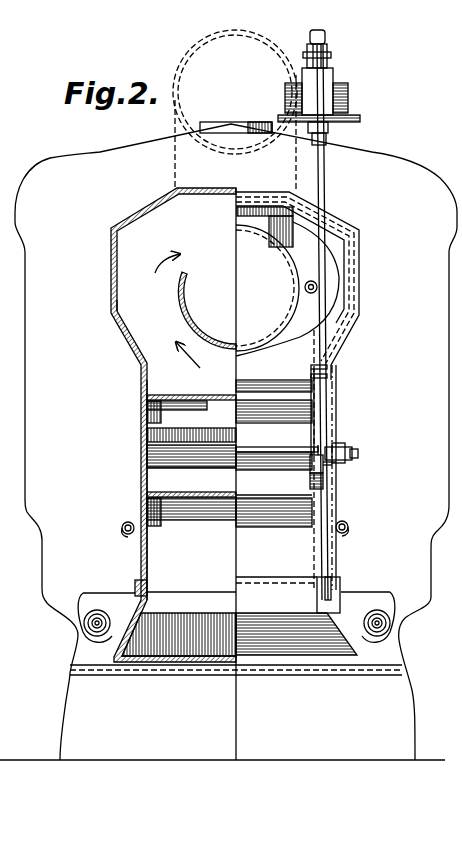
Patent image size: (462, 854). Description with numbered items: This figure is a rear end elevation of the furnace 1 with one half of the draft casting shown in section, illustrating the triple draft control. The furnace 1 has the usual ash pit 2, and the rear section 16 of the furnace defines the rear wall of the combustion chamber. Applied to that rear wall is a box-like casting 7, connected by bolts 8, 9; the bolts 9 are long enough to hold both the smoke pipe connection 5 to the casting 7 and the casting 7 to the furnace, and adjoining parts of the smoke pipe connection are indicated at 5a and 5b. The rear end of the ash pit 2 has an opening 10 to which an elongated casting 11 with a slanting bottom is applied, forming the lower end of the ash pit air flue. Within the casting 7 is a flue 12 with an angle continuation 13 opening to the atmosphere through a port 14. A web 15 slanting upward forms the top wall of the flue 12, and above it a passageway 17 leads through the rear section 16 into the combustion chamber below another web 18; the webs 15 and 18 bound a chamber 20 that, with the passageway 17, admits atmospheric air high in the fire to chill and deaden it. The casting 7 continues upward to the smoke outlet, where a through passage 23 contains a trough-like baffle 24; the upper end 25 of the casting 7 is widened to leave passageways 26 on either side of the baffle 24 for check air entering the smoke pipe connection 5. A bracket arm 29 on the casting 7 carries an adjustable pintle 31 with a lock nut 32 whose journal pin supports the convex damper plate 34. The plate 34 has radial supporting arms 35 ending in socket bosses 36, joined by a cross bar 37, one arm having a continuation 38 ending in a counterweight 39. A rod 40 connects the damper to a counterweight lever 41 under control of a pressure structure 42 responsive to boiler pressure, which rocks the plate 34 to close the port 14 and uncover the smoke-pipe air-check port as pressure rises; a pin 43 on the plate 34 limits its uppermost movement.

The furnace 1 is at (42, 556).
The ash pit 2 is at (236, 693).
The smoke pipe connection 5 is at (262, 349).
The drum hood 5a is at (293, 220).
The blower housing 5b is at (186, 58).
The casting 7 is at (141, 386).
The bolts 8 is at (122, 533).
The bolts 9 is at (311, 293).
The opening 10 is at (182, 645).
The elongated casting 11 is at (292, 640).
The flue 12 is at (159, 574).
The angle continuation 13 is at (274, 485).
The port 14 is at (283, 500).
The web 15 is at (196, 498).
The rear section 16 is at (158, 435).
The passageway 17 is at (147, 437).
The web 18 is at (182, 365).
The chamber 20 is at (191, 478).
The through passage 23 is at (183, 263).
The baffle 24 is at (180, 292).
The upper end of the casting 25 is at (111, 297).
The passageways 26 is at (150, 325).
The bracket arm 29 is at (334, 452).
The adjustable pintles 31 is at (359, 452).
The lock nuts 32 is at (345, 460).
The damper plate 34 is at (280, 392).
The radial supporting arms 35 is at (320, 446).
The socket boss 36 is at (330, 467).
The cross bar 37 is at (252, 446).
The continuation 38 is at (314, 454).
The counterweight 39 is at (323, 488).
The rod 40 is at (325, 186).
The counterweight lever 41 is at (327, 38).
The pressure structure 42 is at (349, 101).
The pin 43 is at (338, 466).